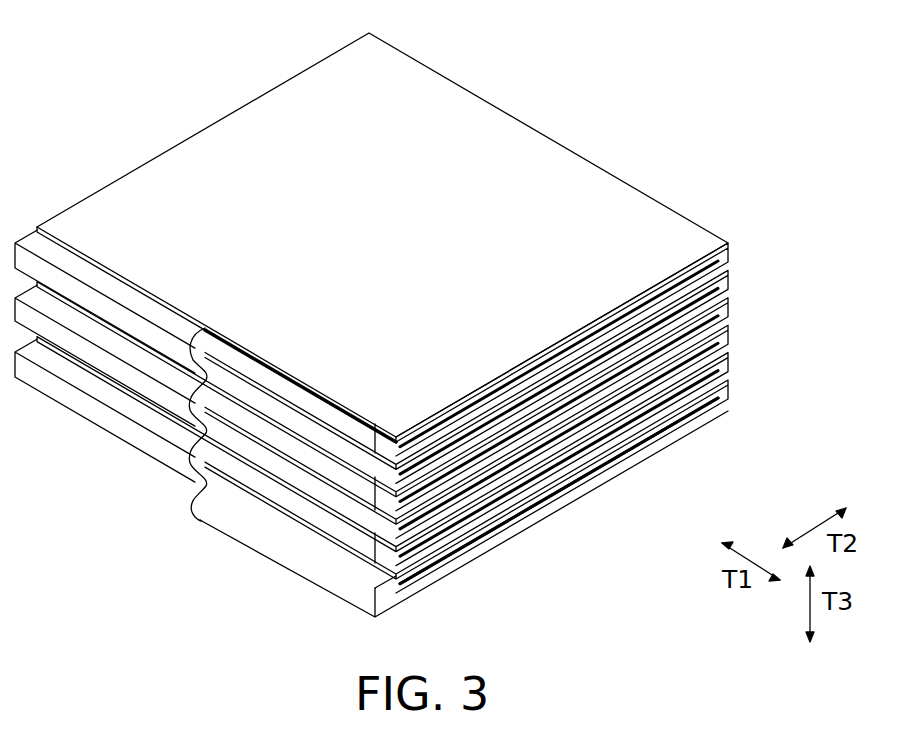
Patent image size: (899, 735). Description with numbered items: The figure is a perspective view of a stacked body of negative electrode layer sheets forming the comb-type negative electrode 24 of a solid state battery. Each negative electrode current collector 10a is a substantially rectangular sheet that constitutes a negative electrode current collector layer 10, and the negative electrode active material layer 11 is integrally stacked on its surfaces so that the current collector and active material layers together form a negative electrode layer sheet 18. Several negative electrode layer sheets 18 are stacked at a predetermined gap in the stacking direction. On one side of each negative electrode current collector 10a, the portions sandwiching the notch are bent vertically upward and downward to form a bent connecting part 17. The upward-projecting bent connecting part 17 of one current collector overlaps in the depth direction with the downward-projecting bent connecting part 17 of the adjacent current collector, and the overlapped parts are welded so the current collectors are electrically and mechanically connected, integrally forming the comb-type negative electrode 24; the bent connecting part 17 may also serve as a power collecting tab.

The comb-type negative electrode 24 is at (578, 108).
The negative electrode layer sheet 18 is at (665, 196).
The bent connecting part 17 is at (97, 308).
The negative electrode active material layer 11 is at (632, 430).
The negative electrode current collector 10a is at (695, 410).
The negative electrode current collector layer 10 is at (385, 582).